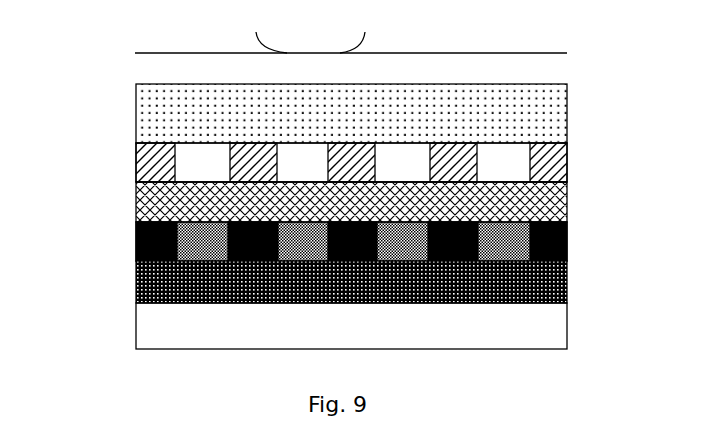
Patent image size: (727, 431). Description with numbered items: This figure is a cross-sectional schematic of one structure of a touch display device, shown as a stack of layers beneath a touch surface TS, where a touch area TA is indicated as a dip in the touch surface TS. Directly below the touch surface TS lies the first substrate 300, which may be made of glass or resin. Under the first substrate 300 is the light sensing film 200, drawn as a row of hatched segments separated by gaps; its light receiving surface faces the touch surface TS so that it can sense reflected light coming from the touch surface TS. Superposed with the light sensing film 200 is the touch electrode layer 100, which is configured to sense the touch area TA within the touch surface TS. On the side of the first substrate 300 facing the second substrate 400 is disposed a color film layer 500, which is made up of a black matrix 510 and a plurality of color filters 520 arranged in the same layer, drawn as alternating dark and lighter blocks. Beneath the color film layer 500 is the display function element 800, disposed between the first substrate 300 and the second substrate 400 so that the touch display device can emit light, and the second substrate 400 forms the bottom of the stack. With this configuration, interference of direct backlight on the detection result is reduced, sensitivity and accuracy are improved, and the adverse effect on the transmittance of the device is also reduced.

The touch surface TS is at (540, 53).
The touch area TA is at (310, 42).
The first substrate 300 is at (567, 110).
The light sensing film 200 is at (567, 148).
The touch electrode layer 100 is at (567, 200).
The color film layer 500 is at (65, 173).
The color filters 520 is at (137, 185).
The black matrix 510 is at (137, 223).
The display function element 800 is at (567, 282).
The second substrate 400 is at (567, 328).